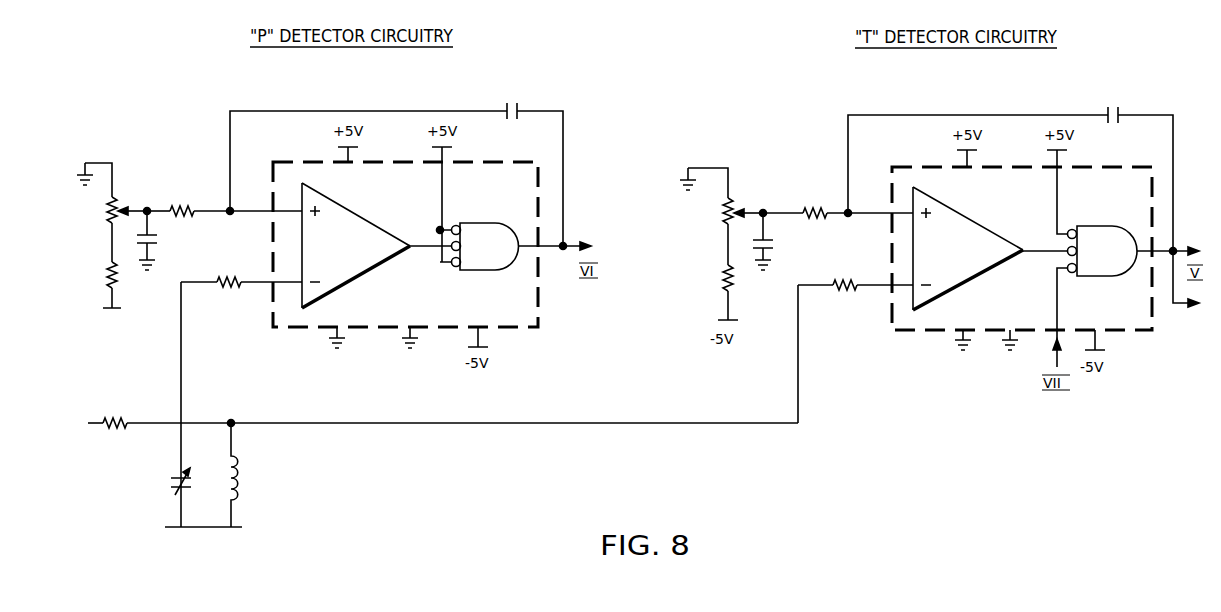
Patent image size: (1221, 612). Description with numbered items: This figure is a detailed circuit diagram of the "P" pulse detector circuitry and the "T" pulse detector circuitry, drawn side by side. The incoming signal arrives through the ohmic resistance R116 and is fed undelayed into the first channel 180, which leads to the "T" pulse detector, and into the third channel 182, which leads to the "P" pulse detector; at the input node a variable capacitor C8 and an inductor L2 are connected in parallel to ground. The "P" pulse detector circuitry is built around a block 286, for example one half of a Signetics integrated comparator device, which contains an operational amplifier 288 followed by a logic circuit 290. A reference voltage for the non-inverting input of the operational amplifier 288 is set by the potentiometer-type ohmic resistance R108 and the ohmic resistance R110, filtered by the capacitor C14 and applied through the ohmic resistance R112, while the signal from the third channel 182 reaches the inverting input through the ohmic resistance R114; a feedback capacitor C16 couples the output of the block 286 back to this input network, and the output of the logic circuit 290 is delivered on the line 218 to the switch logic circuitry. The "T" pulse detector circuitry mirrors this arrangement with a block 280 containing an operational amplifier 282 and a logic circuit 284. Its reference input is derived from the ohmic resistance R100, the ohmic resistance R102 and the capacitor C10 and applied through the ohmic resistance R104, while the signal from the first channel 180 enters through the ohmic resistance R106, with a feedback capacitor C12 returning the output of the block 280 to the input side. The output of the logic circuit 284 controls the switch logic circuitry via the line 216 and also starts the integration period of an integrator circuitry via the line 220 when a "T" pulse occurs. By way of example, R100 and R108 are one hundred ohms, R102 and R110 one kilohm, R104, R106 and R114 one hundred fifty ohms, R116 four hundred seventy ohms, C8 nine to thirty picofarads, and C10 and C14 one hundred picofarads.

The ohmic resistance R108 is at (109, 212).
The ohmic resistance R110 is at (109, 277).
The ohmic resistance R112 is at (185, 199).
The ohmic resistance R114 is at (232, 273).
The ohmic resistance R116 is at (116, 413).
The capacitor C14 is at (158, 238).
The capacitor C16 is at (516, 106).
The capacitor C8 is at (171, 486).
The inductor L2 is at (240, 484).
The operational amplifier 288 is at (366, 223).
The logic circuit 290 is at (472, 225).
The block 286 is at (274, 329).
The line 218 is at (568, 245).
The third channel 182 is at (181, 370).
The ohmic resistance R100 is at (724, 214).
The ohmic resistance R102 is at (724, 280).
The ohmic resistance R104 is at (814, 203).
The ohmic resistance R106 is at (848, 275).
The capacitor C10 is at (772, 243).
The capacitor C12 is at (1118, 109).
The operational amplifier 282 is at (971, 226).
The logic circuit 284 is at (1090, 229).
The block 280 is at (893, 330).
The line 216 is at (1176, 248).
The line 220 is at (1173, 304).
The first channel 180 is at (799, 398).